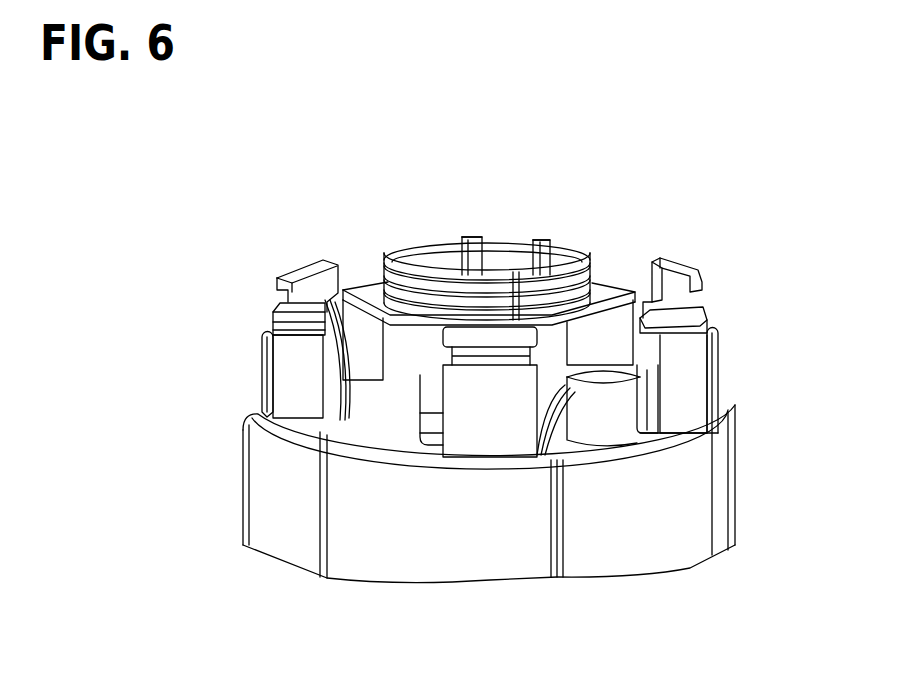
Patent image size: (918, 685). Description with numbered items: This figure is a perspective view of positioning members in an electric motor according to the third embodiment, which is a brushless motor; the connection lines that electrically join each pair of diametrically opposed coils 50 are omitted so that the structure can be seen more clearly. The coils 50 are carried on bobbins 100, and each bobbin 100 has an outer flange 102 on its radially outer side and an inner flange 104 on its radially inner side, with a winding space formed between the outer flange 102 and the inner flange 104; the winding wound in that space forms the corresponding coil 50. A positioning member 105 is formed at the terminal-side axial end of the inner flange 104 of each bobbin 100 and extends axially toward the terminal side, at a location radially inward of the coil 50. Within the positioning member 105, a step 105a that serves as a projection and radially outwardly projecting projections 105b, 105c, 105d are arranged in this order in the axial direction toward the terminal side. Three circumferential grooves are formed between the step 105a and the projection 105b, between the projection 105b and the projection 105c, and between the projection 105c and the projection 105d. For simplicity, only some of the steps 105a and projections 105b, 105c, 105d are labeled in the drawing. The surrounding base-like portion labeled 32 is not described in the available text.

The base ring 32 is at (263, 503).
The coil 50 is at (372, 321).
The bobbin 100 is at (280, 383).
The outer flange 102 is at (282, 360).
The inner flange 104 is at (372, 287).
The positioning member 105 is at (405, 265).
The step 105a is at (428, 290).
The projection 105b is at (444, 270).
The projection 105c is at (466, 300).
The projection 105d is at (486, 265).